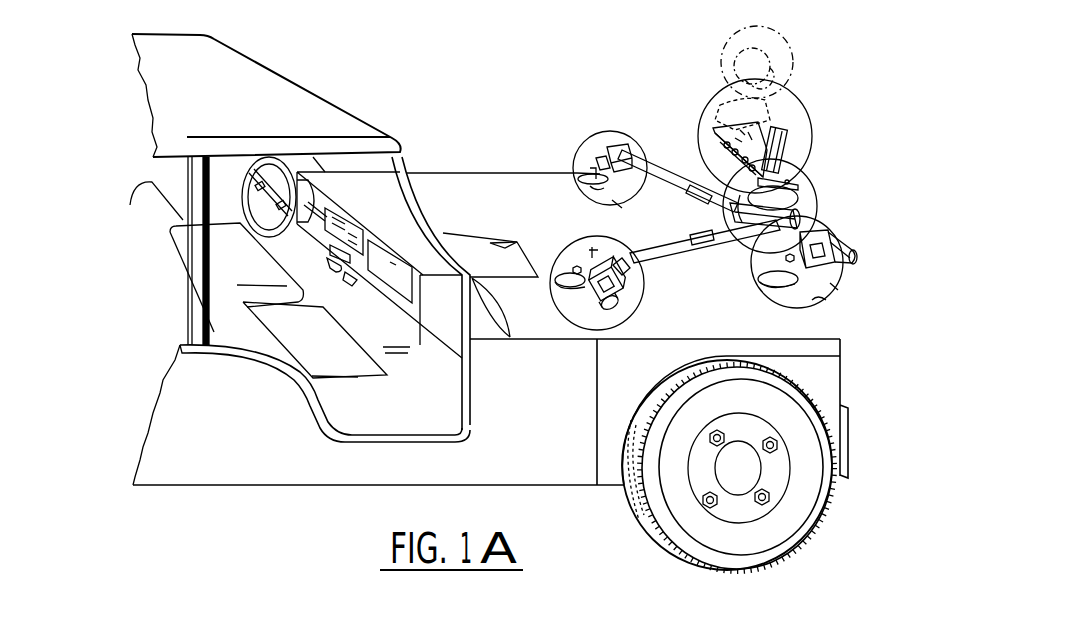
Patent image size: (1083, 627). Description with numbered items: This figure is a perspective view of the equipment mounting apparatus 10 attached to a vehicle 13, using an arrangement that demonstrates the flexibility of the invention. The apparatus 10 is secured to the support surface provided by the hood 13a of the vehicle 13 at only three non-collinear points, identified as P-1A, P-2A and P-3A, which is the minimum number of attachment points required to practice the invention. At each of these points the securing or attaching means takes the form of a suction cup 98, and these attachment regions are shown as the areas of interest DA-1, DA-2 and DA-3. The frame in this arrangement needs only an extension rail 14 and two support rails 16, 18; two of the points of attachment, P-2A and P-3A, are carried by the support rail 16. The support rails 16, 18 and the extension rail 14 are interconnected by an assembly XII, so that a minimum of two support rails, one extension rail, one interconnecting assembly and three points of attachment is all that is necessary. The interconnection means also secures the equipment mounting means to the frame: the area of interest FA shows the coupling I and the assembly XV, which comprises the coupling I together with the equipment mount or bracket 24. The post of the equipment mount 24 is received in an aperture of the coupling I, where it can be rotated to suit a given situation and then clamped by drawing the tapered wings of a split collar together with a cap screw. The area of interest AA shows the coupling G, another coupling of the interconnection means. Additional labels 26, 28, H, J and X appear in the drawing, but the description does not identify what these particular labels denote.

The equipment mounting apparatus 10 is at (683, 73).
The vehicle 13 is at (321, 85).
The hood 13a is at (460, 173).
The extension rail 14 is at (798, 130).
The support rail 16 is at (673, 182).
The support rail 18 is at (678, 268).
The equipment mount or bracket 24 is at (724, 156).
The support bracket 26 is at (710, 120).
The shaft coupling 28 is at (710, 193).
The suction cup 98 is at (588, 170).
The area of interest FA is at (793, 92).
The area of interest AA is at (800, 188).
The area of interest DA-1 is at (610, 313).
The area of interest DA-2 is at (610, 131).
The area of interest DA-3 is at (840, 285).
The point of attachment P-1A is at (643, 305).
The point of attachment P-2A is at (852, 267).
The point of attachment P-3A is at (592, 130).
The coupling G is at (683, 230).
The hanger H is at (593, 190).
The joint J is at (612, 203).
The coupling I is at (802, 180).
The section line X is at (618, 137).
The assembly XII is at (797, 203).
The assembly XV is at (797, 152).